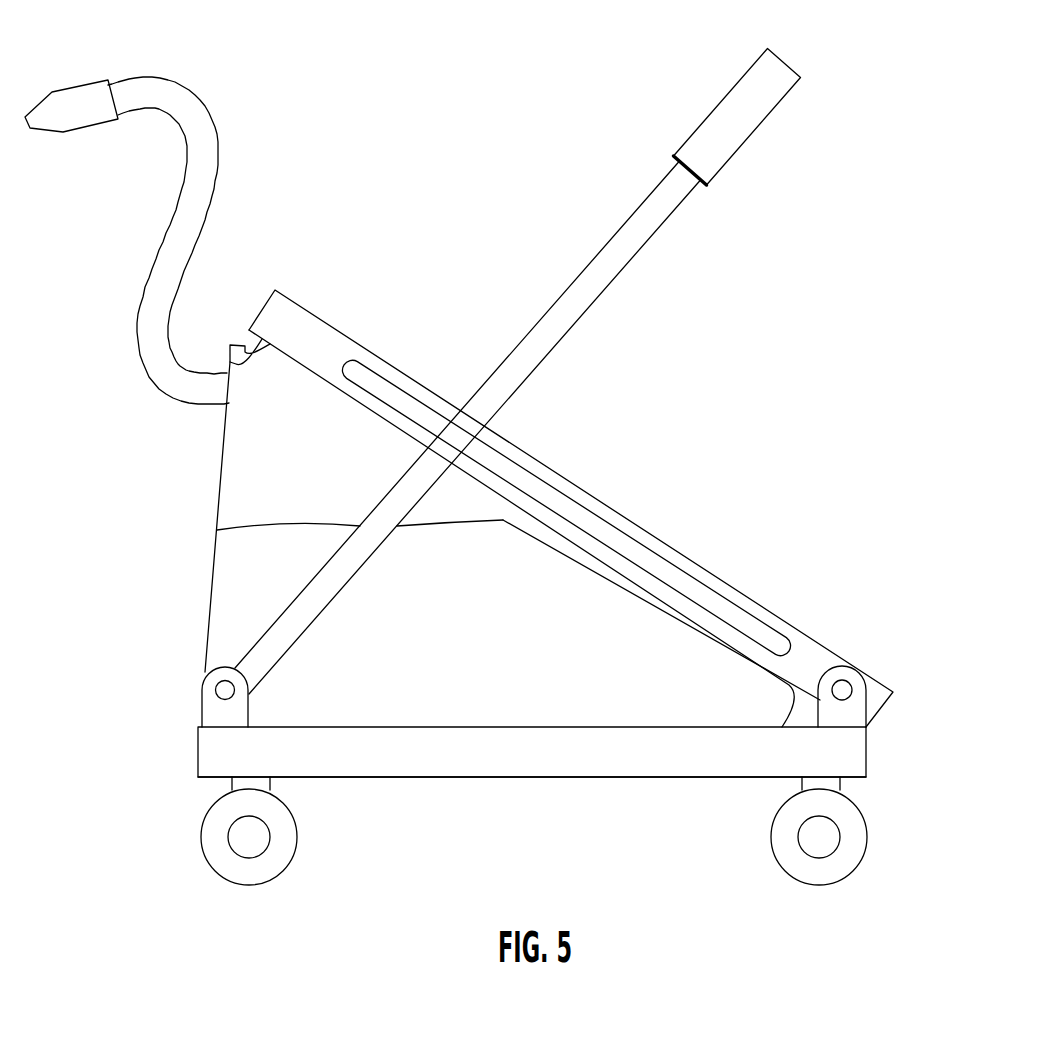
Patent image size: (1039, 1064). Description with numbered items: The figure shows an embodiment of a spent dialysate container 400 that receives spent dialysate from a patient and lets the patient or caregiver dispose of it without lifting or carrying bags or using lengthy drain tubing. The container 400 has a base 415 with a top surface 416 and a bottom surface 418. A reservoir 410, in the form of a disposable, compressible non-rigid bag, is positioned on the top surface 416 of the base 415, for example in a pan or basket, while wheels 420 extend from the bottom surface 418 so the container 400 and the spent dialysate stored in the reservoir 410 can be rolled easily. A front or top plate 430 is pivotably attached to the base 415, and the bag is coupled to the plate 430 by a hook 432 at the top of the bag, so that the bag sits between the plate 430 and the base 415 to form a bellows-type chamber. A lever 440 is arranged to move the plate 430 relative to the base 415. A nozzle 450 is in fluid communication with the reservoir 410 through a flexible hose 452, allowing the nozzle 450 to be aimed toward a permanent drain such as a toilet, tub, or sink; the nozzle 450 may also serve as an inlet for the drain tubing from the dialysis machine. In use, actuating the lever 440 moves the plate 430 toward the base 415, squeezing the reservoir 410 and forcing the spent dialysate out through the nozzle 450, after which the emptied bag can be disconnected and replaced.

The spent dialysate container 400 is at (891, 163).
The reservoir 410 is at (245, 561).
The base 415 is at (858, 751).
The top surface 416 is at (802, 727).
The bottom surface 418 is at (601, 779).
The wheels 420 is at (298, 836).
The plate 430 is at (337, 328).
The hook 432 is at (255, 368).
The lever 440 is at (668, 220).
The nozzle 450 is at (92, 83).
The flexible hose 452 is at (222, 163).